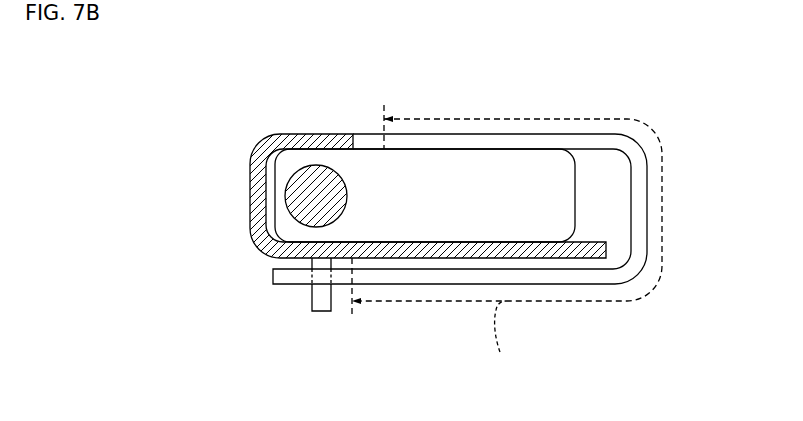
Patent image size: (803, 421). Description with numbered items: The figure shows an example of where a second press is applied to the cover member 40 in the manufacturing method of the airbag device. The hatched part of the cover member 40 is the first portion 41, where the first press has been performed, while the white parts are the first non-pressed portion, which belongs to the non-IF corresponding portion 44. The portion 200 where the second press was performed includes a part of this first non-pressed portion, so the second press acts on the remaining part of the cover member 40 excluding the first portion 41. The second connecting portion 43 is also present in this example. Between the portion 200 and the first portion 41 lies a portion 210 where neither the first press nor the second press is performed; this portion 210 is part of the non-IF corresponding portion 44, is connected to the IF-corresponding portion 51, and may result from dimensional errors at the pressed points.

The cover member 40 is at (660, 111).
The first portion 41 is at (251, 253).
The second connecting portion 43 is at (293, 275).
The non-IF corresponding portion 44 is at (637, 212).
The IF-corresponding portion 51 is at (313, 136).
The portion where neither the first press nor the second press is performed 210 is at (371, 134).
The portion where the second press was performed 200 is at (526, 336).